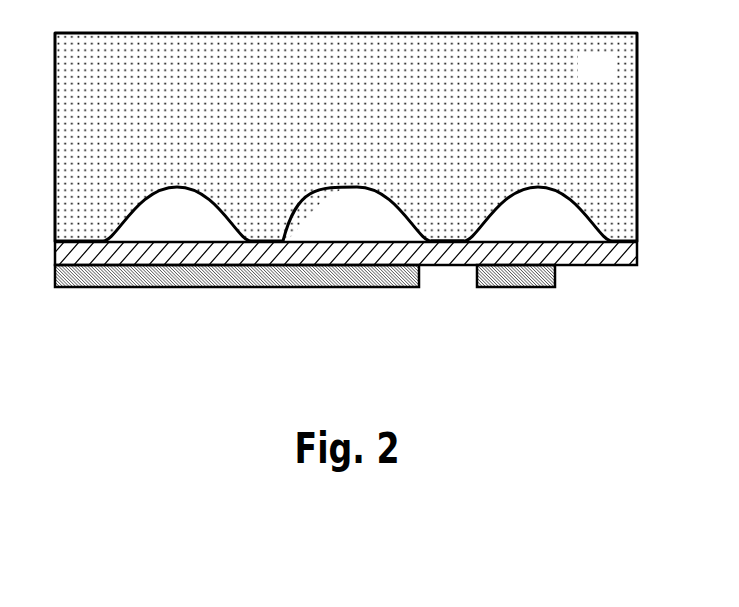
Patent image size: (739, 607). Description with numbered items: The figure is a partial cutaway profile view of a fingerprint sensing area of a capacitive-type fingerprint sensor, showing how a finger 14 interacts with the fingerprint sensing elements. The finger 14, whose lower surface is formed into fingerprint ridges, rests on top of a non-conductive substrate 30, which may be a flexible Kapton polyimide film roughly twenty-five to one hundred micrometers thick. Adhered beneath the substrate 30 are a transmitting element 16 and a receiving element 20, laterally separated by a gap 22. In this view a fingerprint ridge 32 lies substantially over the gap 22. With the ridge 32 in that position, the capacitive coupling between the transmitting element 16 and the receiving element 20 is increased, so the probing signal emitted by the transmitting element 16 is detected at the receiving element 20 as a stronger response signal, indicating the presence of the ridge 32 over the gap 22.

The finger 14 is at (582, 78).
The non-conductive substrate 30 is at (624, 256).
The transmitting element 16 is at (250, 273).
The receiving element 20 is at (518, 284).
The fingerprint ridge 32 is at (448, 241).
The gap 22 is at (450, 287).